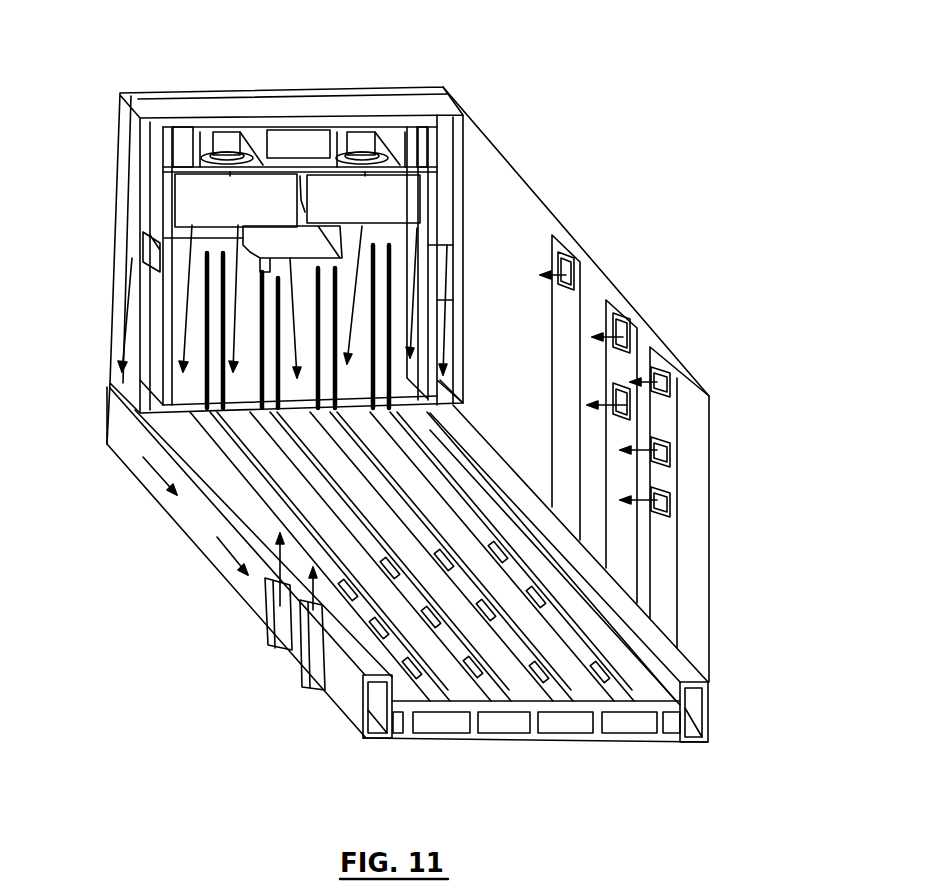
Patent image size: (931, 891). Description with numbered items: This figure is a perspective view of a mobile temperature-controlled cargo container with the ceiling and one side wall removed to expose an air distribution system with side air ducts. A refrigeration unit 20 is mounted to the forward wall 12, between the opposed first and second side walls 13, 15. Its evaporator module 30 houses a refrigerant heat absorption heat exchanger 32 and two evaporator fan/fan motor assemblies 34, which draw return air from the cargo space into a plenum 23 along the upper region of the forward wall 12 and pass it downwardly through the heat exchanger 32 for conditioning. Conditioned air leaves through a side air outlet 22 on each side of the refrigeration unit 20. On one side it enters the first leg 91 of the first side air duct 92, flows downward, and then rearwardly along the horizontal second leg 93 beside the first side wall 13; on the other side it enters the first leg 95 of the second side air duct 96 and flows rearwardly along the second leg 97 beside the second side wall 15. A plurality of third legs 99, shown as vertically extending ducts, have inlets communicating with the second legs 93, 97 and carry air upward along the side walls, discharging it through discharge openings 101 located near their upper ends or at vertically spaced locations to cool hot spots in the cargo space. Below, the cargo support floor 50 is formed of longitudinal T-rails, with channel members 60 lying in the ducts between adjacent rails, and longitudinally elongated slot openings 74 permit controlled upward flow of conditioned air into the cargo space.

The refrigeration unit 20 is at (110, 96).
The forward wall 12 is at (378, 90).
The first side wall 13 is at (122, 148).
The second side wall 15 is at (453, 152).
The side air outlet 22 is at (140, 243).
The plenum 23 is at (283, 140).
The evaporator module 30 is at (293, 118).
The refrigerant heat absorption heat exchanger 32 is at (408, 187).
The evaporator fan/fan motor assembly 34 is at (223, 140).
The cargo support floor 50 is at (420, 500).
The channel member 60 is at (568, 735).
The opening 74 is at (393, 583).
The first leg of the first side air duct 91 is at (117, 337).
The first side air duct 92 is at (110, 308).
The second leg of the first side air duct 93 is at (200, 523).
The first leg of the second side air duct 95 is at (452, 347).
The second side air duct 96 is at (460, 308).
The second leg of the second side air duct 97 is at (513, 487).
The third leg 99 is at (568, 305).
The discharge opening 101 is at (553, 230).